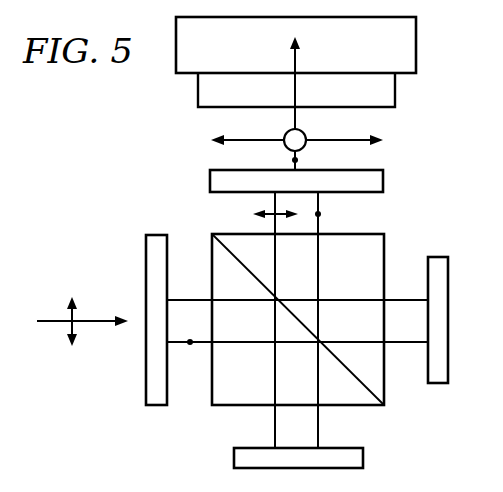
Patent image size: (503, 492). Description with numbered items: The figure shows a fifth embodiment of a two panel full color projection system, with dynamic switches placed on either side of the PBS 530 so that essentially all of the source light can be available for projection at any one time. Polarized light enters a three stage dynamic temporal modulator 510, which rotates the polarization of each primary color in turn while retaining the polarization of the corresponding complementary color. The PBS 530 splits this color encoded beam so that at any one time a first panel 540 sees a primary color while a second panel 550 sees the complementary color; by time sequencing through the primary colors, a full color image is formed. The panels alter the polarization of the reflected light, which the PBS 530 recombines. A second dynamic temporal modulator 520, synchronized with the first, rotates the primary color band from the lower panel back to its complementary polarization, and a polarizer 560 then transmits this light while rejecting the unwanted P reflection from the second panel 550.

The three stage dynamic temporal modulator 510 is at (157, 405).
The second dynamic temporal modulator 520 is at (383, 181).
The PBS 530 is at (384, 240).
The first panel 540 is at (363, 459).
The second panel 550 is at (438, 383).
The polarizer 560 is at (247, 135).